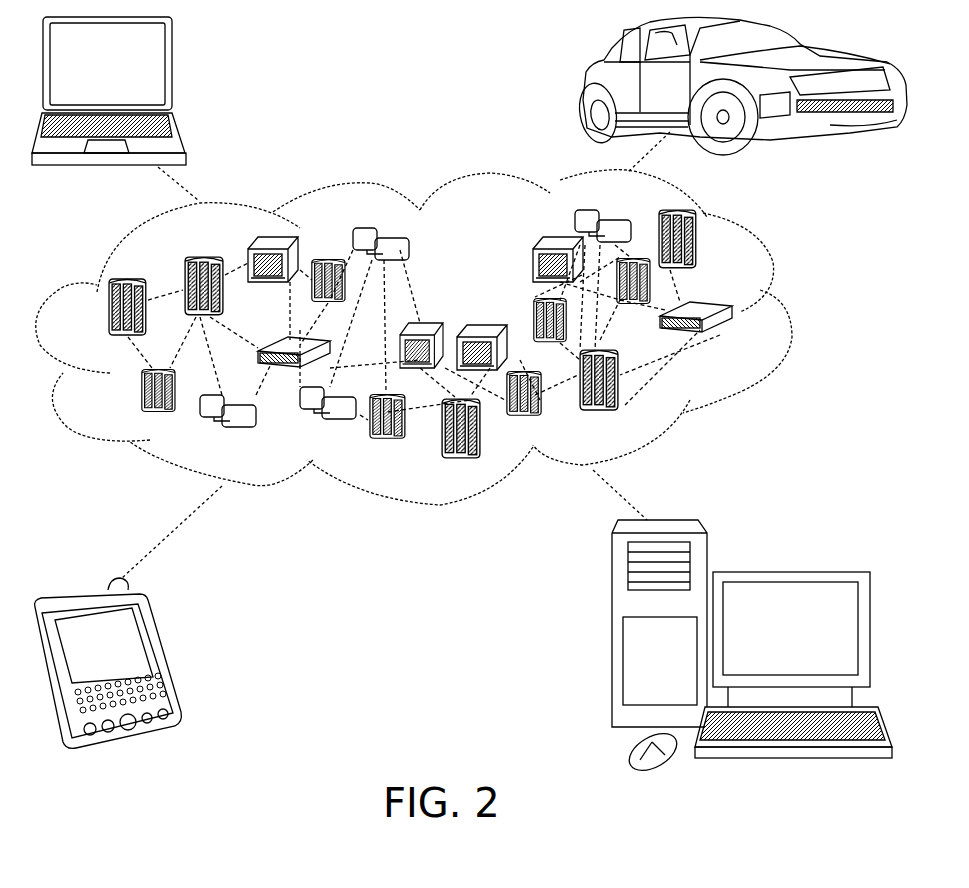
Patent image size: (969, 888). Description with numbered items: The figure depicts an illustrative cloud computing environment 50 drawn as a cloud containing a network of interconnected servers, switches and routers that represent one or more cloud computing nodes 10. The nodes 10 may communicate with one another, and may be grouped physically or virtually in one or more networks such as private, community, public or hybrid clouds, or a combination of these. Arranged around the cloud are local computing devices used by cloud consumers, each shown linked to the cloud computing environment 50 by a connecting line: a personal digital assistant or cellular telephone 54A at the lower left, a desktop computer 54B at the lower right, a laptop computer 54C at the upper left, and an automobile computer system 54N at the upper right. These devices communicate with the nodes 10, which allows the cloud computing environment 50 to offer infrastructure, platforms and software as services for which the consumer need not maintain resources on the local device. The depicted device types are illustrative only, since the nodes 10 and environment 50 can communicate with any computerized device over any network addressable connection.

The cloud computing node 10 is at (746, 345).
The cloud computing environment 50 is at (440, 337).
The personal digital assistant or cellular telephone 54A is at (163, 655).
The desktop computer 54B is at (790, 572).
The laptop computer 54C is at (172, 72).
The automobile computer system 54N is at (580, 84).